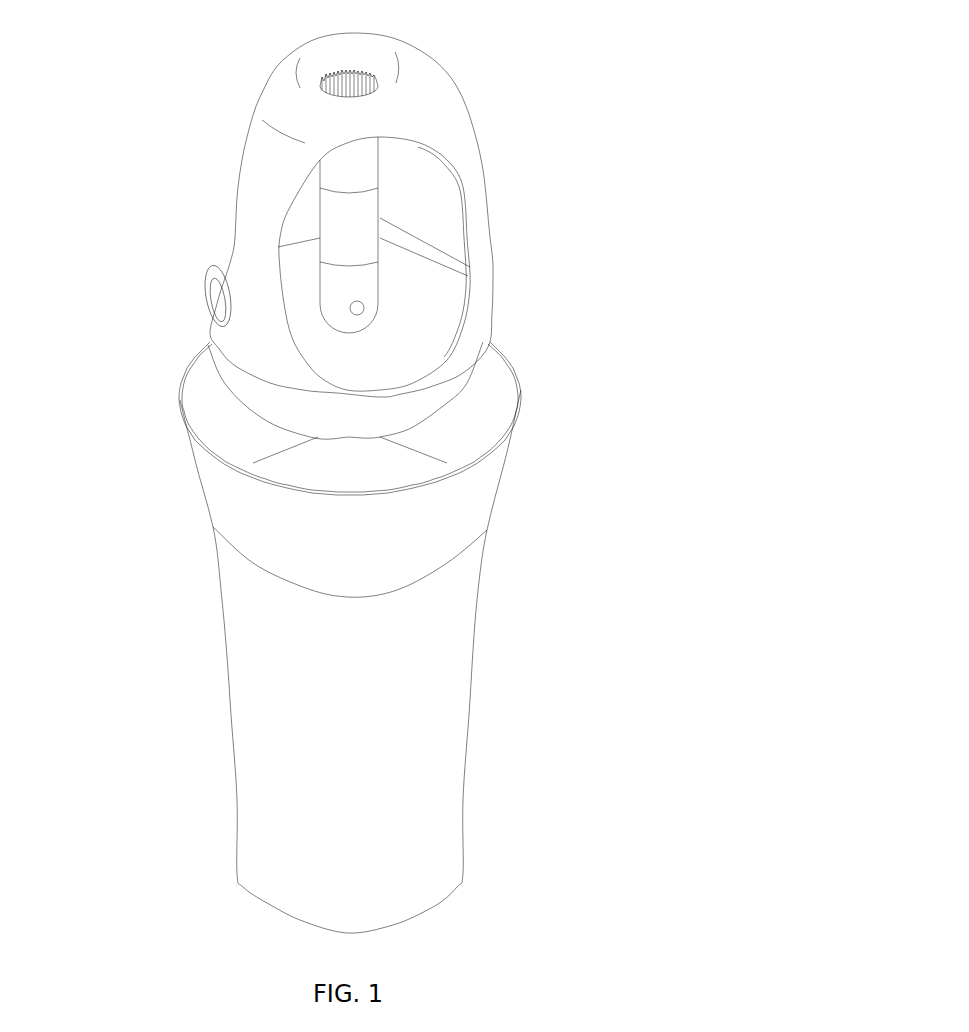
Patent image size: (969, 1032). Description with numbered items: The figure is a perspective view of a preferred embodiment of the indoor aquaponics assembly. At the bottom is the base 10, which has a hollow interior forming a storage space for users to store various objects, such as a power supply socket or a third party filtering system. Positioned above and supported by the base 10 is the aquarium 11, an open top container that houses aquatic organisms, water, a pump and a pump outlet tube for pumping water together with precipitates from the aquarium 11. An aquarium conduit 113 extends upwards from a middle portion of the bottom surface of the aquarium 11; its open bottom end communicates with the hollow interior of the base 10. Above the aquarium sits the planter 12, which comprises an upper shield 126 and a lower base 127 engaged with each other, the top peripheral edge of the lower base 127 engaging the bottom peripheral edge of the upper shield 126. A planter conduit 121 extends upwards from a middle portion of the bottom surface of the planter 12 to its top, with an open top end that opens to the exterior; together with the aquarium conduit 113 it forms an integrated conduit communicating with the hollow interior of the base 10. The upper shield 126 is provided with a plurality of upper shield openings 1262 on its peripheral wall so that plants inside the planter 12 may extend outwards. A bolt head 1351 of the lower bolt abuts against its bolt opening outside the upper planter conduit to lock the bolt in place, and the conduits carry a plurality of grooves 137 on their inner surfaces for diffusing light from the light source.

The base 10 is at (410, 682).
The aquarium 11 is at (433, 513).
The planter 12 is at (495, 213).
The aquarium conduit 113 is at (343, 455).
The planter conduit 121 is at (385, 158).
The upper shield 126 is at (260, 120).
The lower base 127 is at (330, 422).
The grooves 137 is at (360, 90).
The upper shield openings 1262 is at (420, 188).
The bolt head 1351 is at (364, 306).